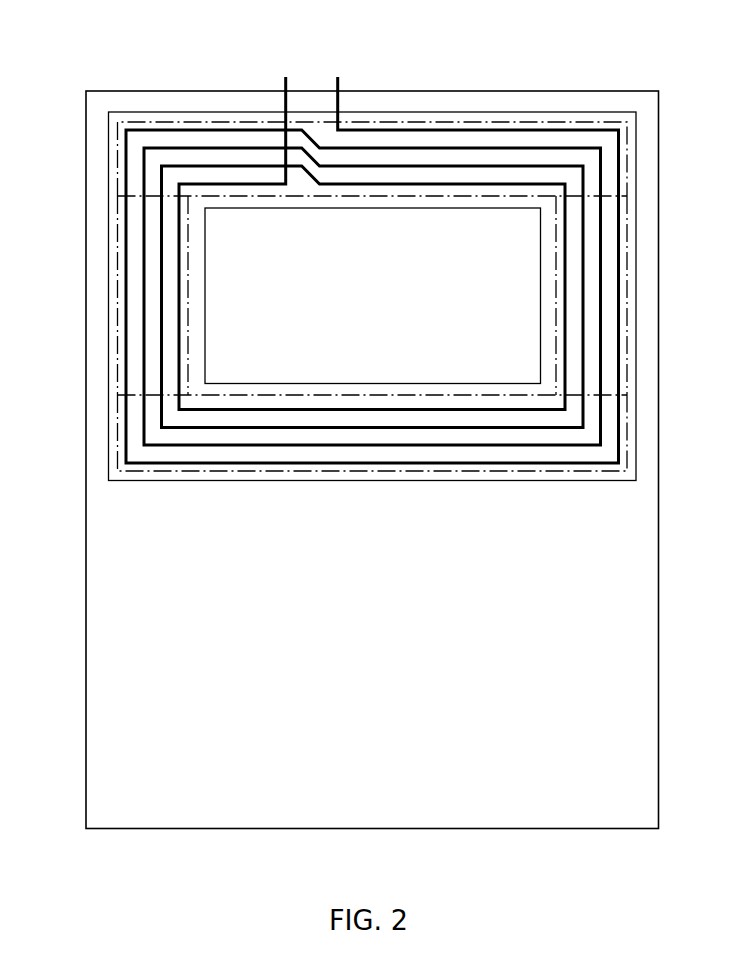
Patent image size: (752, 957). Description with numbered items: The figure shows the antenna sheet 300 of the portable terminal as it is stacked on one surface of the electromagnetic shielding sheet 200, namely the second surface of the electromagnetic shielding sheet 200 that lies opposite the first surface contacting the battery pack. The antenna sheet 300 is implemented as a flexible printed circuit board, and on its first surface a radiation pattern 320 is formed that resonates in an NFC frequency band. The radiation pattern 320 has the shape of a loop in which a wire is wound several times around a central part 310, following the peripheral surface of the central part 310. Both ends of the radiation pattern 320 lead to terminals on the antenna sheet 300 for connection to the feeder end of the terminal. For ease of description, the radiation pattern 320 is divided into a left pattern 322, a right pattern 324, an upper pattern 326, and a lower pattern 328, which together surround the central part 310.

The electromagnetic shielding sheet 200 is at (85, 552).
The antenna sheet 300 is at (492, 112).
The central part 310 is at (383, 220).
The radiation pattern 320 is at (619, 296).
The left pattern 322 is at (117, 297).
The right pattern 324 is at (627, 248).
The upper pattern 326 is at (627, 158).
The lower pattern 328 is at (627, 432).